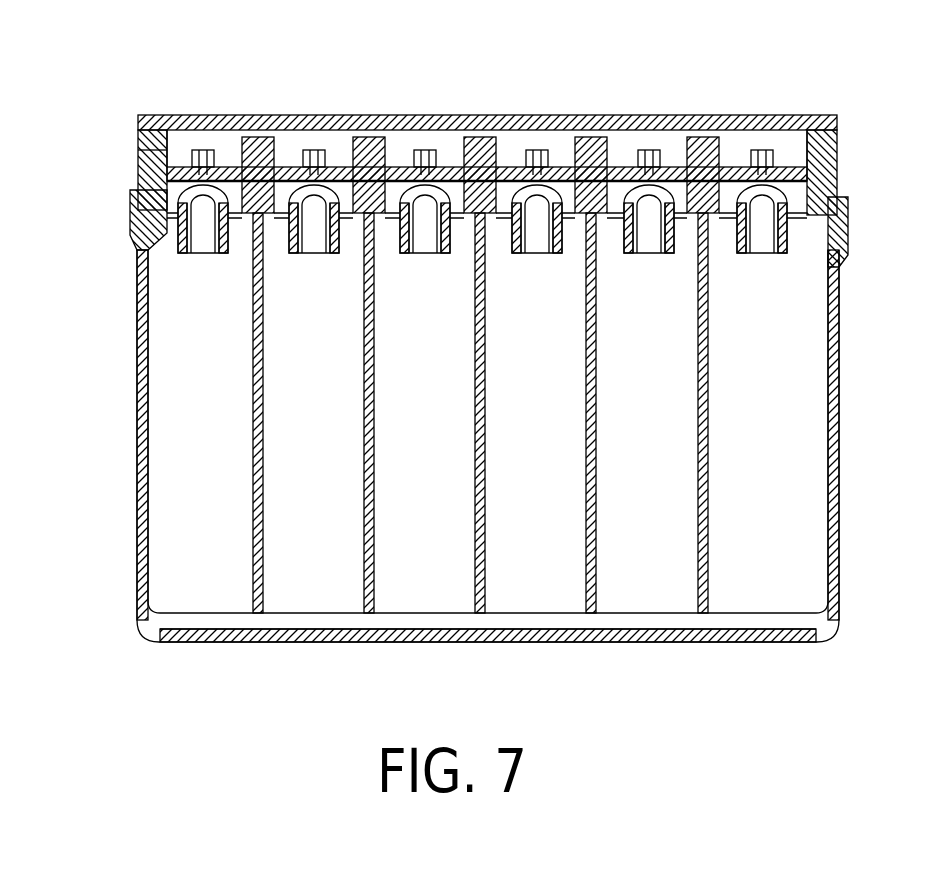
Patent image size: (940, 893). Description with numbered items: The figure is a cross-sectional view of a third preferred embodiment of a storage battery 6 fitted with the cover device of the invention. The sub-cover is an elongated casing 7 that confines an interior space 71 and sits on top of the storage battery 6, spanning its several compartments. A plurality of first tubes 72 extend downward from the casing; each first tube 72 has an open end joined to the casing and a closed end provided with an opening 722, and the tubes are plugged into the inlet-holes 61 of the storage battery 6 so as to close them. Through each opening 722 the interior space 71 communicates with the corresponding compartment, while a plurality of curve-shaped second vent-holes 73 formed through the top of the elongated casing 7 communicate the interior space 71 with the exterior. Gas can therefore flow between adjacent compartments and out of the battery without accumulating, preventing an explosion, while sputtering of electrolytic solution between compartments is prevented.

The battery case 6 is at (836, 142).
The inlet-hole 61 is at (130, 191).
The elongated casing 7 is at (528, 120).
The space 71 is at (257, 132).
The first tube 72 is at (158, 133).
The opening 722 is at (197, 145).
The curve-shaped second vent-hole 73 is at (317, 125).